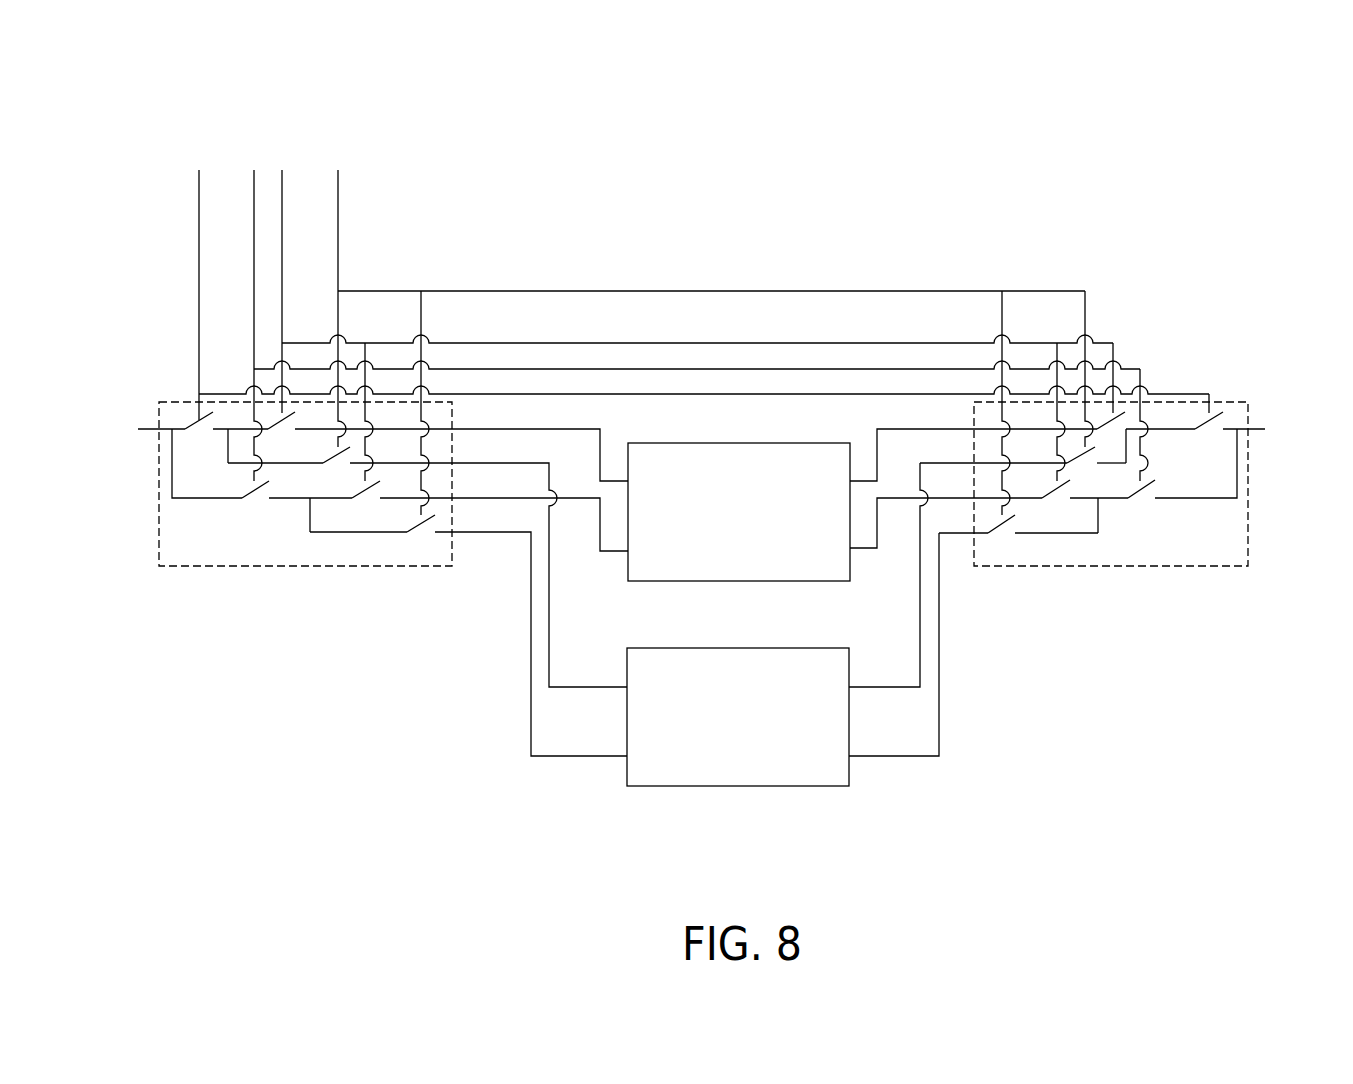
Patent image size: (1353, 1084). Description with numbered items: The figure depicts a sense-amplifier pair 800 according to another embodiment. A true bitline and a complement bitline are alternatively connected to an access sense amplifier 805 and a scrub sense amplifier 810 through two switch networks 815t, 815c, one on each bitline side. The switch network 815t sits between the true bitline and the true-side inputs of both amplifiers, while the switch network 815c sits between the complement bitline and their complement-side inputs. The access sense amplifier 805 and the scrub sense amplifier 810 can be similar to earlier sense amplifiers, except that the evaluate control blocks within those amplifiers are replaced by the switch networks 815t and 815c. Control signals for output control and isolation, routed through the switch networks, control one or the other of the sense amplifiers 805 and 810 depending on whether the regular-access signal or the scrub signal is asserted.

The sense-amplifier pair 800 is at (314, 74).
The access sense amplifier 805 is at (755, 573).
The scrub sense amplifier 810 is at (755, 778).
The switch network 815t is at (325, 560).
The switch network 815c is at (1132, 561).